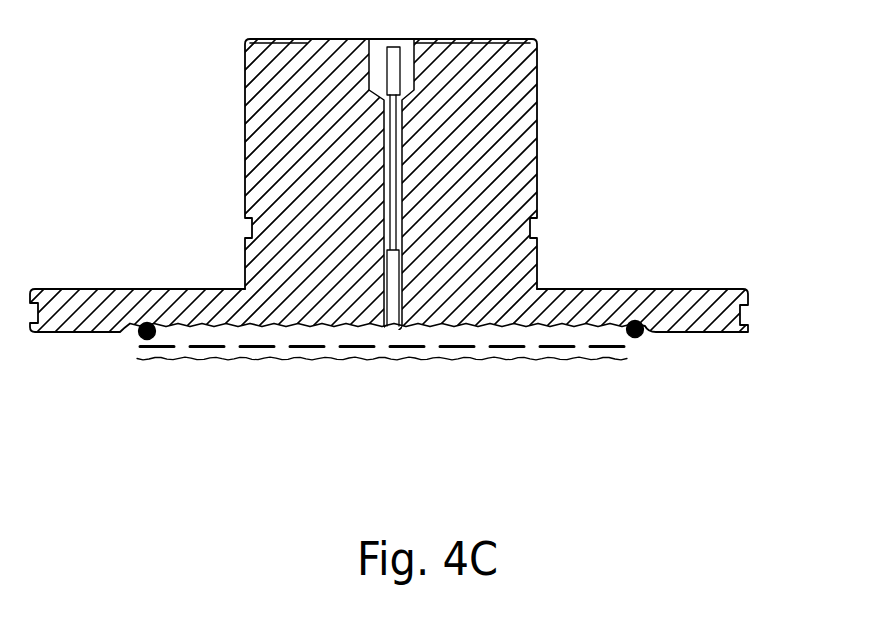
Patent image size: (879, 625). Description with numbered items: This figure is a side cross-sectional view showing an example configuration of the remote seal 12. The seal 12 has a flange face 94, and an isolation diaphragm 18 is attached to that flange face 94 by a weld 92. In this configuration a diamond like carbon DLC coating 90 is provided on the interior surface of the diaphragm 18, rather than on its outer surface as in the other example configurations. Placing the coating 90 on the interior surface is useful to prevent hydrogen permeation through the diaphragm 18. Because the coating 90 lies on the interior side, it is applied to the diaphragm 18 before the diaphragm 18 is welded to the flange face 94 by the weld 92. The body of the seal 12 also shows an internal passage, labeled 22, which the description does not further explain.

The seal 12 is at (537, 70).
The fluid channel 22 is at (398, 148).
The flange face 94 is at (750, 297).
The weld 92 is at (657, 305).
The DLC coating 90 is at (649, 340).
The diaphragm 18 is at (418, 350).